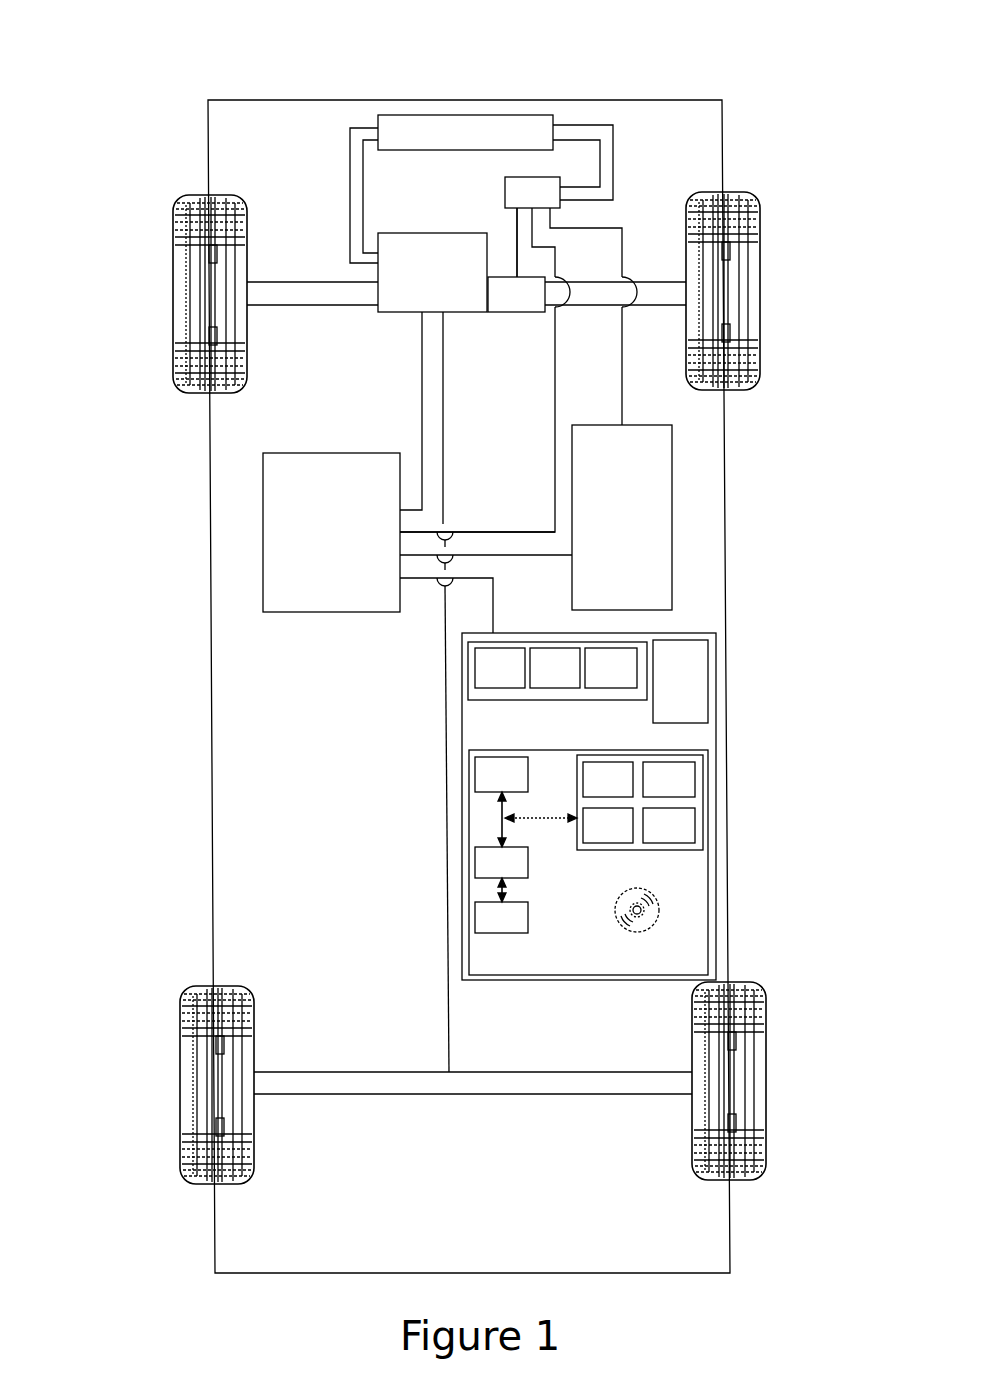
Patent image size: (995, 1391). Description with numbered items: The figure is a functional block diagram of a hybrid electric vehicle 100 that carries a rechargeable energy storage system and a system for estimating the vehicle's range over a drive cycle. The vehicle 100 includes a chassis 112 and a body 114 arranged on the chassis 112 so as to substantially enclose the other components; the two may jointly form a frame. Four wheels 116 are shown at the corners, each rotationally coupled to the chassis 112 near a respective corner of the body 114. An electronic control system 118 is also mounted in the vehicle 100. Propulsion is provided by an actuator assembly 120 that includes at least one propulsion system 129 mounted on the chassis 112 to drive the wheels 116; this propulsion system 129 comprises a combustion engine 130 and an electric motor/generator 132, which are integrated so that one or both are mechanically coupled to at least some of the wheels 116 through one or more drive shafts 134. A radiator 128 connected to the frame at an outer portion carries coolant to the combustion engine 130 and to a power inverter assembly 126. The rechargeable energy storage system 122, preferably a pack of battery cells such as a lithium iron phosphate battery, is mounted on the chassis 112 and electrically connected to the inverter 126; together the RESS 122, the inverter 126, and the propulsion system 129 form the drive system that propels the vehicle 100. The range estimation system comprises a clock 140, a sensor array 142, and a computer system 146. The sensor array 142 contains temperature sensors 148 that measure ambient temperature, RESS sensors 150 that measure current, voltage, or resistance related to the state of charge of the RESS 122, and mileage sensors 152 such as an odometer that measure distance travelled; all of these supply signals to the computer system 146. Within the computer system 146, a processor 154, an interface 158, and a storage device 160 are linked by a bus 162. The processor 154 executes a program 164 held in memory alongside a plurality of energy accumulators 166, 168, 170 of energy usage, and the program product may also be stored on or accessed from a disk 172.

The vehicle 100 is at (158, 44).
The chassis 112 is at (447, 776).
The body 114 is at (208, 628).
The wheels 116 is at (173, 300).
The electronic control system 118 is at (353, 545).
The actuator assembly 120 is at (461, 293).
The rechargeable energy storage system (RESS) 122 is at (643, 529).
The power inverter assembly 126 is at (553, 204).
The radiator 128 is at (458, 115).
The propulsion system 129 is at (512, 277).
The combustion engine 130 is at (459, 270).
The electric motor/generator 132 is at (537, 307).
The drive shafts 134 is at (305, 282).
The clock 140 is at (590, 802).
The sensor array 142 is at (517, 669).
The computer system 146 is at (590, 862).
The temperature sensors 148 is at (520, 679).
The RESS sensors 150 is at (575, 679).
The mileage sensors 152 is at (631, 679).
The processor 154 is at (522, 786).
The interface 158 is at (522, 874).
The storage device 160 is at (522, 929).
The bus 162 is at (498, 826).
The program 164 is at (628, 791).
The energy accumulator 166 is at (689, 791).
The energy accumulator 168 is at (628, 837).
The energy accumulator 170 is at (689, 837).
The disk 172 is at (659, 911).